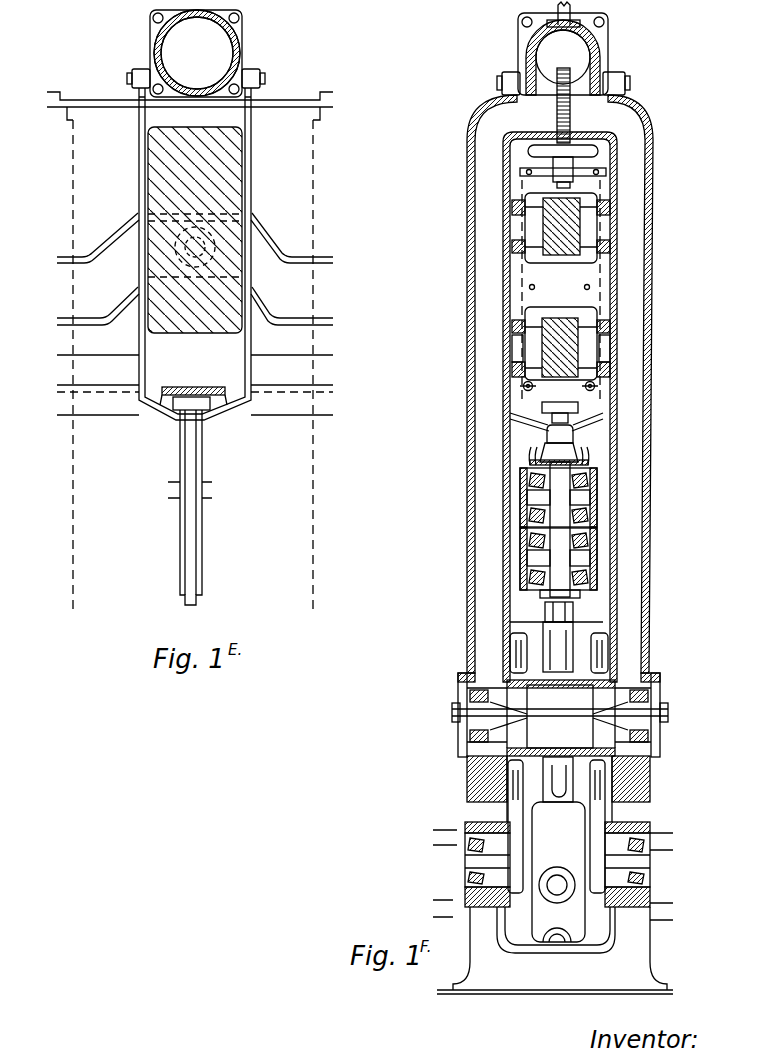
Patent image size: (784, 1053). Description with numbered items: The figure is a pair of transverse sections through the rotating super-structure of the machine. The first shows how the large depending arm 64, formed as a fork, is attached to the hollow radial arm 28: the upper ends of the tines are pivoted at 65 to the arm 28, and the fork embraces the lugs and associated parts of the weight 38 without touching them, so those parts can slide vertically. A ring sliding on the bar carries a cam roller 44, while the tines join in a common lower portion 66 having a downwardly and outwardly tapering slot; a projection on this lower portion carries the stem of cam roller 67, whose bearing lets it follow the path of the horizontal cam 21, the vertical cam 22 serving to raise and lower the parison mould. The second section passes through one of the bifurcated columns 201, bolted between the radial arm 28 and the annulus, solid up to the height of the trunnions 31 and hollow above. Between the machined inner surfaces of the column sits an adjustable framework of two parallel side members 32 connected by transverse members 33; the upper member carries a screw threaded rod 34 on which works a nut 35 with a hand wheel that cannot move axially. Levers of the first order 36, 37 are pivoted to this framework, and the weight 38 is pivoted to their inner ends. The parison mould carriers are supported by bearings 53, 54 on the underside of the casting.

In FIG. 1E, the horizontal cam 21 is at (283, 410).
In FIG. 1E, the vertical cam 22 is at (290, 258).
In FIG. 1E, the hollow arm 28 is at (207, 58).
In FIG. 1F, the hollow arm 28 is at (575, 60).
In FIG. 1F, the trunnions 31 is at (660, 700).
In FIG. 1F, the side members 32 is at (513, 292).
In FIG. 1F, the transverse members 33 is at (560, 288).
In FIG. 1F, the screw threaded rod 34 is at (571, 120).
In FIG. 1F, the nut 35 is at (565, 163).
In FIG. 1F, the lever of the first order 36 is at (582, 228).
In FIG. 1F, the lever of the first order 37 is at (576, 355).
In FIG. 1E, the weight 38 is at (227, 193).
In FIG. 1E, the cam roller 44 is at (240, 227).
In FIG. 1F, the bearing 53 is at (600, 500).
In FIG. 1F, the bearing 54 is at (600, 562).
In FIG. 1E, the depending arm 64 is at (248, 283).
In FIG. 1E, the pivot 65 is at (258, 80).
In FIG. 1E, the lower portion 66 is at (202, 525).
In FIG. 1E, the cam roller 67 is at (203, 405).
In FIG. 1F, the bifurcated column 201 is at (466, 493).